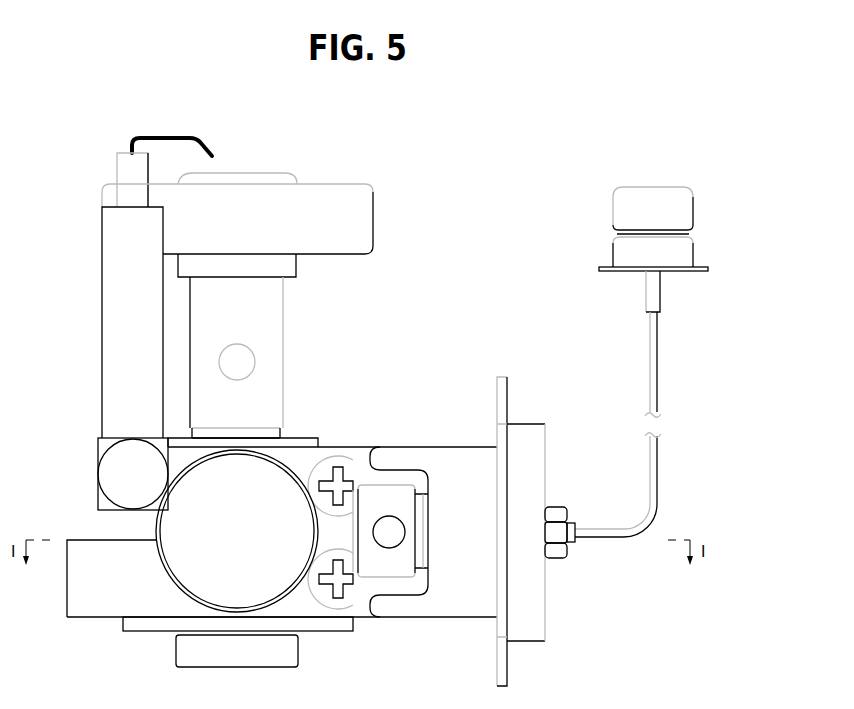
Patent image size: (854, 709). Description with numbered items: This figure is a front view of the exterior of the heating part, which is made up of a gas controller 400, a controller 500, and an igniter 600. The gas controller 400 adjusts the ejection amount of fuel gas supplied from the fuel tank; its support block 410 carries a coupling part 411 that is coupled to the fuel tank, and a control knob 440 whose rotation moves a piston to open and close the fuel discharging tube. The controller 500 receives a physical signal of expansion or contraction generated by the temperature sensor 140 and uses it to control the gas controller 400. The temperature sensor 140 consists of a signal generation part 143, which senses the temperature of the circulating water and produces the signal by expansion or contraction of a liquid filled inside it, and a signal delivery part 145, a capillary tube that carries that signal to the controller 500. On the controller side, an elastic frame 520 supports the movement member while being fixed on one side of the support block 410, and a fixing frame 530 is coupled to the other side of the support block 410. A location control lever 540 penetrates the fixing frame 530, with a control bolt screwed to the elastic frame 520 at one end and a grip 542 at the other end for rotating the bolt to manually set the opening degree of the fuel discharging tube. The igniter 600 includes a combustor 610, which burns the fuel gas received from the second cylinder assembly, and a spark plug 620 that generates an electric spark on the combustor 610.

The temperature sensor 140 is at (617, 243).
The signal generation part 143 is at (620, 250).
The signal delivery part 145 is at (652, 352).
The gas controller 400 is at (184, 570).
The support block 410 is at (77, 583).
The coupling part 411 is at (182, 650).
The control knob 440 is at (239, 587).
The controller 500 is at (321, 531).
The elastic frame 520 is at (455, 460).
The fixing frame 530 is at (298, 460).
The location control lever 540 is at (390, 536).
The grip 542 is at (389, 540).
The igniter 600 is at (246, 288).
The combustor 610 is at (366, 229).
The spark plug 620 is at (110, 247).